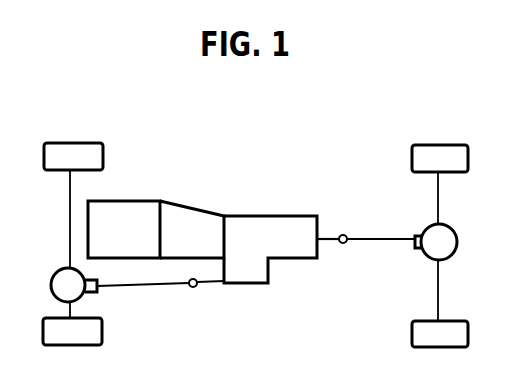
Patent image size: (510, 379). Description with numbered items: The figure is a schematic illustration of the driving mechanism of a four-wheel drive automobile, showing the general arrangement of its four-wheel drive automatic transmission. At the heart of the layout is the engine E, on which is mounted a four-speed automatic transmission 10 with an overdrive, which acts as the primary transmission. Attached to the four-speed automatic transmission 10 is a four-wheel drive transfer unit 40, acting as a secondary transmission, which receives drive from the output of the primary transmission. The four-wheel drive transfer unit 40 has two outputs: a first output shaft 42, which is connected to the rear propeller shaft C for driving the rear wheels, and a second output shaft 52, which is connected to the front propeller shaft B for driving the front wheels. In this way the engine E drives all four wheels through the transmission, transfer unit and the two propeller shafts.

The engine E is at (131, 210).
The four-speed automatic transmission 10 is at (193, 212).
The four-wheel drive transfer unit 40 is at (268, 227).
The first output shaft 42 is at (332, 243).
The second output shaft 52 is at (210, 283).
The front propeller shaft B is at (143, 290).
The rear propeller shaft C is at (398, 242).